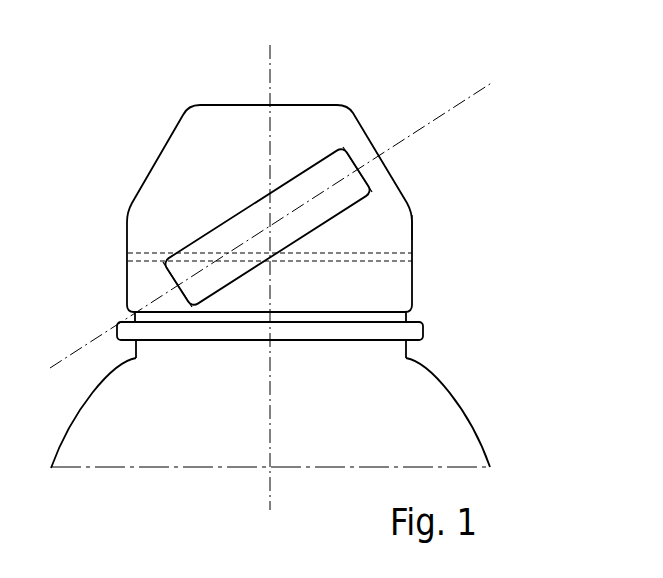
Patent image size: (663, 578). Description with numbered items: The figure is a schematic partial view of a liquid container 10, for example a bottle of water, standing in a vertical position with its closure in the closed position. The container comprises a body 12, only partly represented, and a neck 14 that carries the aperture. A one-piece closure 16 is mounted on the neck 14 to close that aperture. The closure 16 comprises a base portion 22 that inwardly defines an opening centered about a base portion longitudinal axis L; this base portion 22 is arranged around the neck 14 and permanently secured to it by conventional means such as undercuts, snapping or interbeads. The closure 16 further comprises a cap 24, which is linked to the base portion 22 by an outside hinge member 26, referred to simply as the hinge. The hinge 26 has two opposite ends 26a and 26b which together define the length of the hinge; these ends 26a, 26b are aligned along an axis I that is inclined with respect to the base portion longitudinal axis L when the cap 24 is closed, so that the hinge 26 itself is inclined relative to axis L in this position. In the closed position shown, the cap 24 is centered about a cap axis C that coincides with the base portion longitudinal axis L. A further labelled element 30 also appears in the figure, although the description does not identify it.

The liquid container 10 is at (512, 333).
The body 12 is at (452, 396).
The neck 14 is at (410, 317).
The one-piece closure 16 is at (286, 213).
The base portion 22 is at (402, 292).
The cap 24 is at (402, 224).
The outside hinge member 26 is at (353, 212).
The hinge end 26a is at (358, 166).
The hinge end 26b is at (176, 288).
The hinge line 30 is at (393, 249).